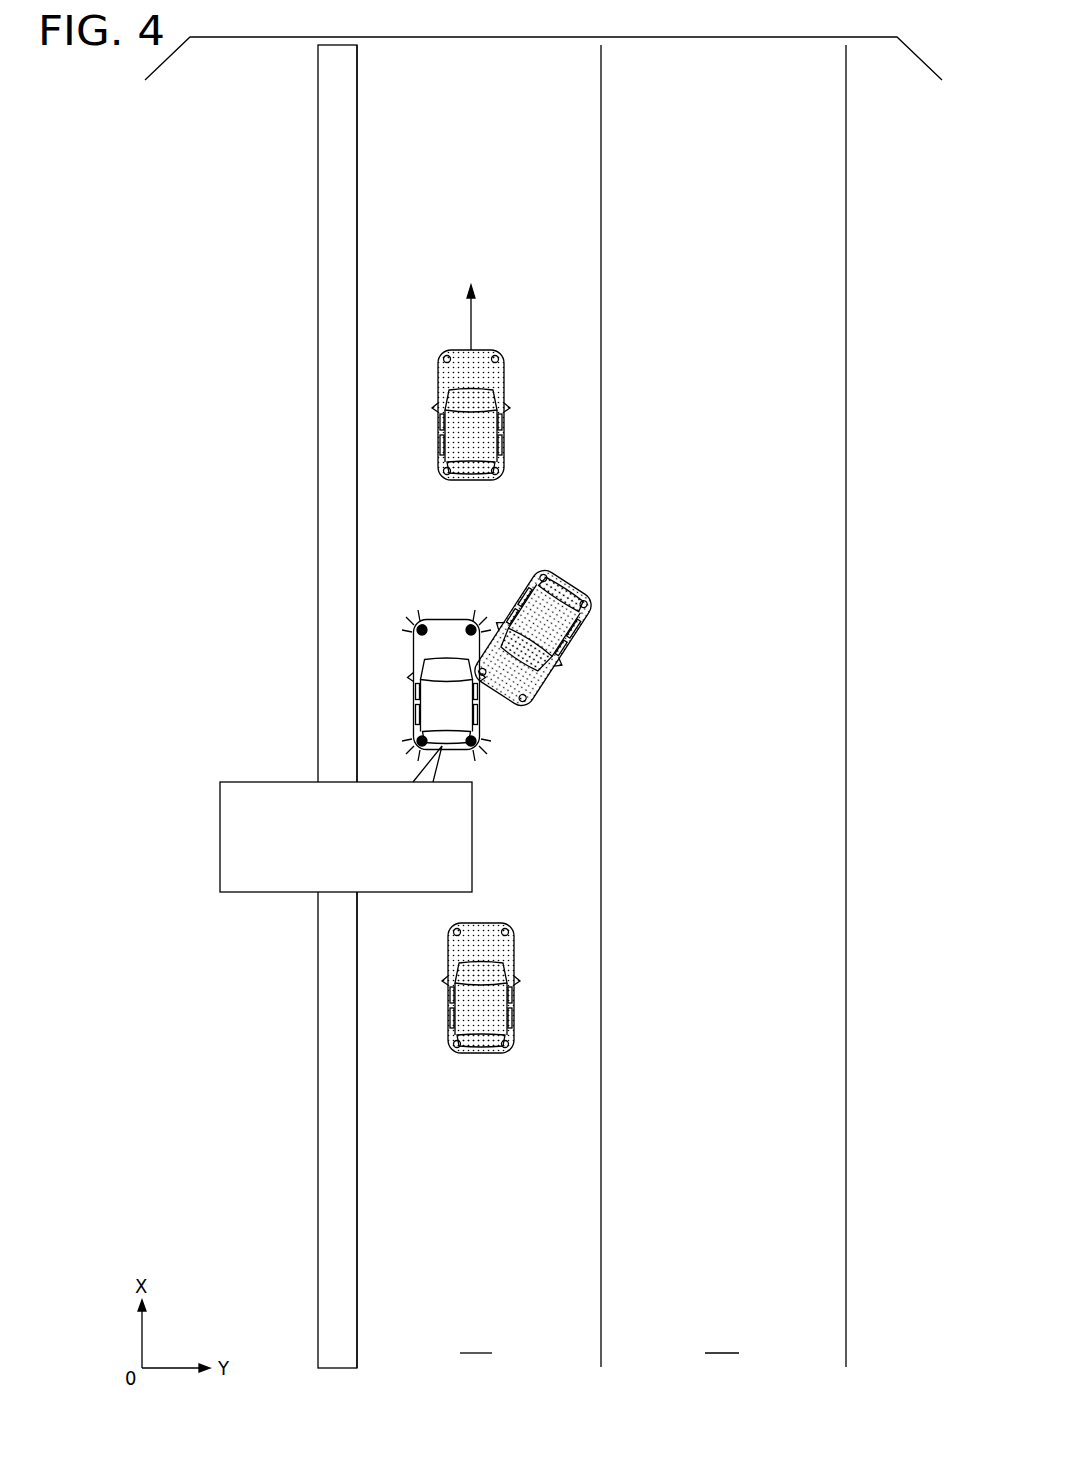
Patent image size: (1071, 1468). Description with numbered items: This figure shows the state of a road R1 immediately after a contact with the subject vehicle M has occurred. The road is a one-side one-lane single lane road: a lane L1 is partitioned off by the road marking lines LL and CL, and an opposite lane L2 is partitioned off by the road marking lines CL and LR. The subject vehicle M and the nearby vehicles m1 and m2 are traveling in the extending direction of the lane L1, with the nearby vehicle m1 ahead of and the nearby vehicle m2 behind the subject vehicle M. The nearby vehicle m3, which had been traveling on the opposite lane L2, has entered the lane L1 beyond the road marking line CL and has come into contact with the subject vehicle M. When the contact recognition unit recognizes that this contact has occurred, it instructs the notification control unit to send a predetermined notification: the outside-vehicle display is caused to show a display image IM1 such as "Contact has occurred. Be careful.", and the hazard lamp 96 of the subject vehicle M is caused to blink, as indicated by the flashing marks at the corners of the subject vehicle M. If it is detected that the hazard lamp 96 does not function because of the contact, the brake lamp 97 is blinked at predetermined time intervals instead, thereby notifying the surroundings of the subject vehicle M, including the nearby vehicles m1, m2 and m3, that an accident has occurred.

The road shoulder region R1 is at (295, 572).
The road marking line LL is at (357, 1282).
The road marking line CL is at (601, 1282).
The road marking line LR is at (846, 1282).
The lane L1 is at (476, 1341).
The opposite lane L2 is at (722, 1341).
The subject vehicle M is at (471, 723).
The nearby vehicle m1 is at (506, 415).
The nearby vehicle m2 is at (480, 1055).
The nearby vehicle m3 is at (541, 573).
The hazard lamp 96 is at (482, 723).
The brake lamp 97 is at (476, 761).
The display image IM1 is at (220, 833).